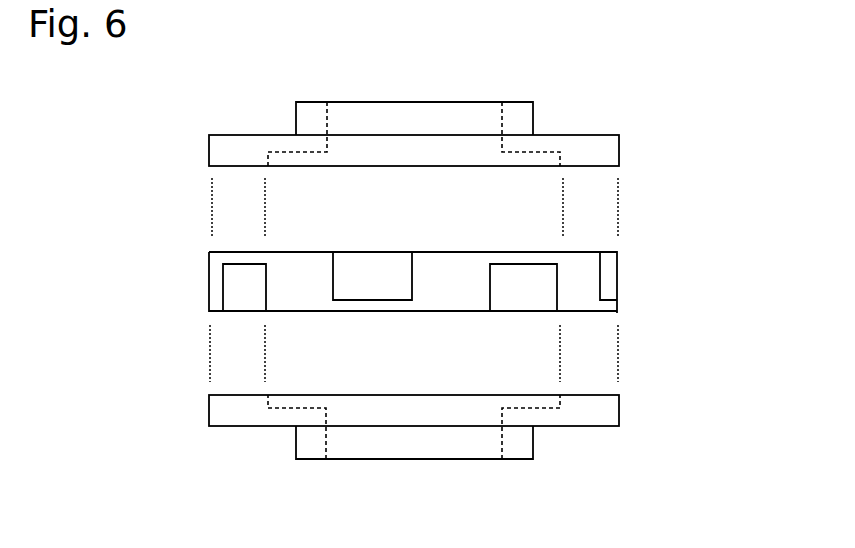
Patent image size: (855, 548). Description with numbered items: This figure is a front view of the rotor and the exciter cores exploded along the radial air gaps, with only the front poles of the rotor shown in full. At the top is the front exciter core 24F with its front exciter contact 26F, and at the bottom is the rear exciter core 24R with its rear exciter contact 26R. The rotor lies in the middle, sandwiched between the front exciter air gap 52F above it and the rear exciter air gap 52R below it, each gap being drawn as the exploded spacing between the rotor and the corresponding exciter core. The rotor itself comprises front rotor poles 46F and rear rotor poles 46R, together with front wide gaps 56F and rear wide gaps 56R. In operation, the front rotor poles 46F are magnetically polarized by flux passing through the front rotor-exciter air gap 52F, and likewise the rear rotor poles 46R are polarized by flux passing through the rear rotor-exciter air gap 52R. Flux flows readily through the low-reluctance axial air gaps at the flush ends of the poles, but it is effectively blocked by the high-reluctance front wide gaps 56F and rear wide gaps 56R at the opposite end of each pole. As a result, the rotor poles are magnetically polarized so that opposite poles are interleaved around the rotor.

The front exciter contact 26F is at (378, 99).
The front exciter core 24F is at (513, 127).
The front exciter air gap 52F is at (238, 205).
The front wide gaps 56F is at (242, 258).
The front rotor poles 46F is at (372, 275).
The rear wide gaps 56R is at (372, 303).
The rear rotor poles 46R is at (243, 272).
The rear exciter air gap 52R is at (585, 343).
The rear exciter core 24R is at (512, 435).
The rear exciter contact 26R is at (443, 459).